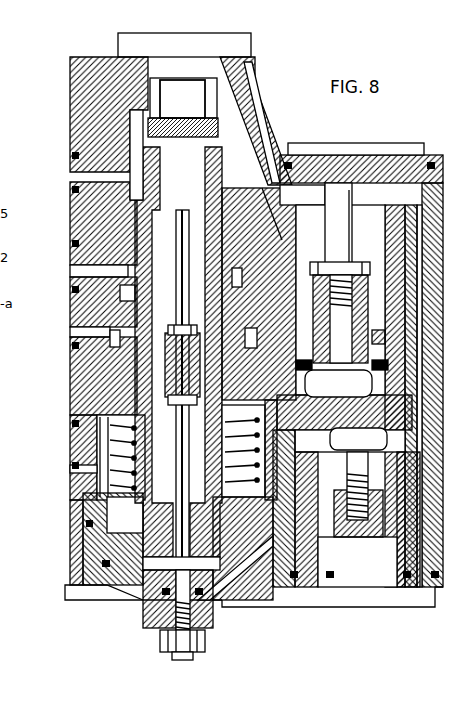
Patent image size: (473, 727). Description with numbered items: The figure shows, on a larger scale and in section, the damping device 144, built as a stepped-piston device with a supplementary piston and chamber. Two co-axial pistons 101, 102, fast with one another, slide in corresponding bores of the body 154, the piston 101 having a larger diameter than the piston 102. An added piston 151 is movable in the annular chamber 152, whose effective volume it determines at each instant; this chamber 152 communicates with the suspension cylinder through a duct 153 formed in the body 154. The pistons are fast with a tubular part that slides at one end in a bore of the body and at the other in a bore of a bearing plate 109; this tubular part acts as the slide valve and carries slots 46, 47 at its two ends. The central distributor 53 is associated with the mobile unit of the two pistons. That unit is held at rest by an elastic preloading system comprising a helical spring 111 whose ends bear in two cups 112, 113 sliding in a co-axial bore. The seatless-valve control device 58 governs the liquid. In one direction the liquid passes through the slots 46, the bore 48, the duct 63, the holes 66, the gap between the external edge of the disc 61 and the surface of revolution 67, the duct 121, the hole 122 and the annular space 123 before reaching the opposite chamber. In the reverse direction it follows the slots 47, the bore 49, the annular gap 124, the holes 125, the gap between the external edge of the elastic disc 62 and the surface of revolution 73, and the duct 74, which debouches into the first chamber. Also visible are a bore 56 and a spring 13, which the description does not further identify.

The damping device 144 is at (60, 86).
The body 154 is at (90, 100).
The slots 47 is at (153, 88).
The bore 49 is at (242, 67).
The sleeve bore 56 is at (160, 140).
The piston 102 is at (128, 220).
The annular chamber 152 is at (110, 252).
The duct 153 is at (72, 271).
The piston 151 is at (130, 296).
The piston 101 is at (110, 380).
The cup 112 is at (100, 418).
The spring 13 is at (75, 448).
The cup 113 is at (72, 474).
The bearing plate 109 is at (90, 540).
The bore 48 is at (150, 570).
The helical spring 111 is at (143, 442).
The central distributor 53 is at (187, 322).
The slots 46 is at (181, 551).
The seatless-valve control device 58 is at (428, 152).
The annular gap 124 is at (374, 215).
The annular space 123 is at (405, 247).
The hole 122 is at (415, 293).
The duct 121 is at (430, 325).
The holes 125 is at (387, 338).
The surface of revolution 73 is at (383, 363).
The duct 74 is at (336, 300).
The elastic disc 62 is at (344, 400).
The disc 61 is at (352, 440).
The surface of revolution 67 is at (347, 494).
The holes 66 is at (430, 472).
The duct 63 is at (252, 587).